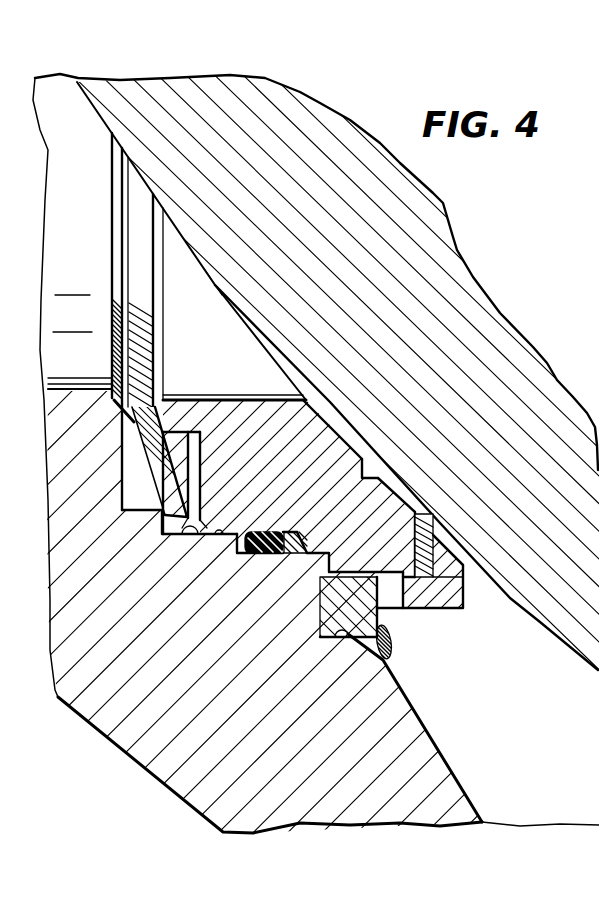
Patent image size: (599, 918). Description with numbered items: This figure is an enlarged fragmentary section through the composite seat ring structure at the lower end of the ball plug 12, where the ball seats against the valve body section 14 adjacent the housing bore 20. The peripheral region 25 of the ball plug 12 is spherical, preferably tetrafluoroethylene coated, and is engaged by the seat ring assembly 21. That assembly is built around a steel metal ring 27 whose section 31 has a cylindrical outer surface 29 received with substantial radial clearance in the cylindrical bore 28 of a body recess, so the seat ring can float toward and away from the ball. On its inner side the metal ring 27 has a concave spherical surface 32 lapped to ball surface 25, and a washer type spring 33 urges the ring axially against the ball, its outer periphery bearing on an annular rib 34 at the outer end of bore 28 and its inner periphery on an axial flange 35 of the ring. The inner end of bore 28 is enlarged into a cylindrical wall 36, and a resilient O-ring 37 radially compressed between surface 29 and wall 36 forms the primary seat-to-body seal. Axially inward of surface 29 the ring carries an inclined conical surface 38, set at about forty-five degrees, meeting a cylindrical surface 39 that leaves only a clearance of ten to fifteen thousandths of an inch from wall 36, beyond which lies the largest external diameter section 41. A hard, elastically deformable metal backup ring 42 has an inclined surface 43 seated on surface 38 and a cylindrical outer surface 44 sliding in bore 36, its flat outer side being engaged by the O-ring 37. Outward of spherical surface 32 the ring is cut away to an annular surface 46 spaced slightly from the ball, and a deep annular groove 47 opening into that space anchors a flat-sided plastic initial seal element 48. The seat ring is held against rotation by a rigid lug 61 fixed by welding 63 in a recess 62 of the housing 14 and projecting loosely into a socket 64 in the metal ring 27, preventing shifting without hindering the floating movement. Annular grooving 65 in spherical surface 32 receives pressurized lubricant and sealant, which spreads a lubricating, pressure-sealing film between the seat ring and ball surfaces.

The ball plug 12 is at (420, 247).
The valve body section 14 is at (160, 748).
The bore of housing end section 20 is at (72, 388).
The seat ring assembly 21 is at (232, 398).
The peripheral region of ball 25 is at (214, 287).
The metal ring 27 is at (334, 430).
The cylindrical bore 28 is at (192, 524).
The cylindrical outer surface 29 is at (220, 532).
The section of metal ring 31 is at (262, 442).
The concave spherical surface 32 is at (313, 458).
The washer type spring 33 is at (147, 448).
The annular rib 34 is at (147, 522).
The axial flange 35 is at (180, 404).
The cylindrical wall 36 is at (243, 556).
The O-ring 37 is at (260, 557).
The inclined conical surface 38 is at (285, 537).
The cylindrical surface 39 is at (330, 554).
The largest external diameter section 41 is at (464, 590).
The metal backup ring 42 is at (288, 558).
The inclined surface of backup ring 43 is at (300, 547).
The cylindrical outer surface of backup ring 44 is at (303, 556).
The annular surface 46 is at (428, 568).
The annular groove 47 is at (440, 605).
The initial seal element 48 is at (440, 605).
The lug 61 is at (333, 594).
The recess 62 is at (390, 668).
The welding 63 is at (393, 643).
The socket 64 is at (390, 588).
The annular grooving 65 is at (372, 478).